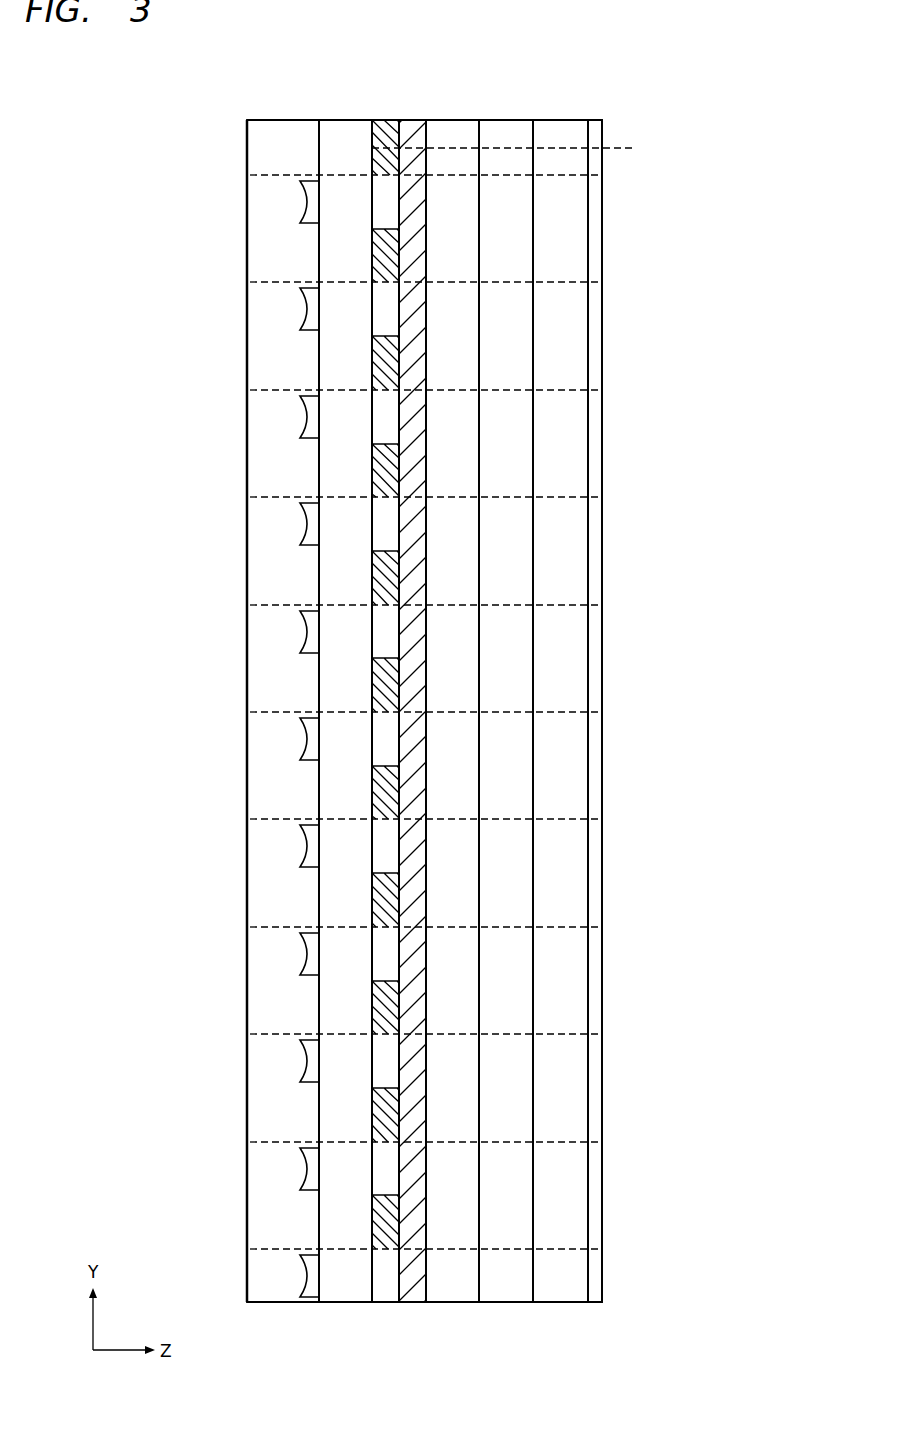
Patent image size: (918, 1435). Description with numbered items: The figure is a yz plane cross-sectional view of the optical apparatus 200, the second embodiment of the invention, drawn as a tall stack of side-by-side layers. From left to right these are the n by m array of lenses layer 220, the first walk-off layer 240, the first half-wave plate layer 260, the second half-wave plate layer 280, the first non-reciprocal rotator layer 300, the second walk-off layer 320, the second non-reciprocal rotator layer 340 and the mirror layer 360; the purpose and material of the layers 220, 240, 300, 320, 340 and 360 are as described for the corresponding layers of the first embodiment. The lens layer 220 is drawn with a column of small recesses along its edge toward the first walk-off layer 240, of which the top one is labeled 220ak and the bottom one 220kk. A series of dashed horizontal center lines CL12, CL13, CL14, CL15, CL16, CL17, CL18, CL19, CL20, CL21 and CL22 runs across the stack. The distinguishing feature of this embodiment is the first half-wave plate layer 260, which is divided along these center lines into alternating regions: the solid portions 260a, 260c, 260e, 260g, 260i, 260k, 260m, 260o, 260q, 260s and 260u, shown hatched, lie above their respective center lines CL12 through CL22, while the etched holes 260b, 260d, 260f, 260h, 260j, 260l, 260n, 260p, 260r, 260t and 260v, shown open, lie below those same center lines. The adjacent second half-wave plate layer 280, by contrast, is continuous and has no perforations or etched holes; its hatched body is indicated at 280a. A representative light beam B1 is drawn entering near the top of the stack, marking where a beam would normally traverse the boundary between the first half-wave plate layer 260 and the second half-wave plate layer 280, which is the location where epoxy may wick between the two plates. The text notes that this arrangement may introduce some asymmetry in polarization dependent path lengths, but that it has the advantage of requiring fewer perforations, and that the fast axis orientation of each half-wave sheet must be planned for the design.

The optical apparatus 200 is at (711, 66).
The n by m array of lenses layer 220 is at (283, 118).
The recess / channel in first layer 220ak is at (305, 203).
The recess / channel in first layer 220kk is at (305, 1277).
The first walk-off layer 240 is at (346, 118).
The first half-wave plate layer 260 is at (389, 118).
The solid portion 260a is at (382, 118).
The etched hole 260b is at (374, 202).
The solid portion 260c is at (374, 258).
The etched hole 260d is at (374, 309).
The solid portion 260e is at (374, 365).
The etched hole 260f is at (374, 417).
The solid portion 260g is at (374, 472).
The etched hole 260h is at (374, 524).
The solid portion 260i is at (374, 580).
The etched hole 260j is at (374, 632).
The solid portion 260k is at (374, 687).
The etched hole 260l is at (374, 739).
The solid portion 260m is at (374, 795).
The etched hole 260n is at (374, 846).
The solid portion 260o is at (374, 902).
The etched hole 260p is at (374, 954).
The solid portion 260q is at (374, 1010).
The etched hole 260r is at (374, 1061).
The solid portion 260s is at (374, 1117).
The etched hole 260t is at (374, 1169).
The solid portion 260u is at (374, 1224).
The etched hole 260v is at (374, 1276).
The second half-wave plate layer 280 is at (405, 118).
The hatched portion of layer 280 280a is at (418, 118).
The first non-reciprocal rotator layer 300 is at (455, 118).
The second walk-off layer 320 is at (507, 118).
The second non-reciprocal rotator layer 340 is at (560, 118).
The mirror layer 360 is at (597, 118).
The light beam B1 is at (635, 148).
The center line CL12 is at (267, 175).
The center line CL13 is at (267, 282).
The center line CL14 is at (267, 390).
The center line CL15 is at (267, 497).
The center line CL16 is at (267, 605).
The center line CL17 is at (267, 712).
The center line CL18 is at (267, 819).
The center line CL19 is at (267, 927).
The center line CL20 is at (267, 1034).
The center line CL21 is at (267, 1142).
The center line CL22 is at (267, 1249).